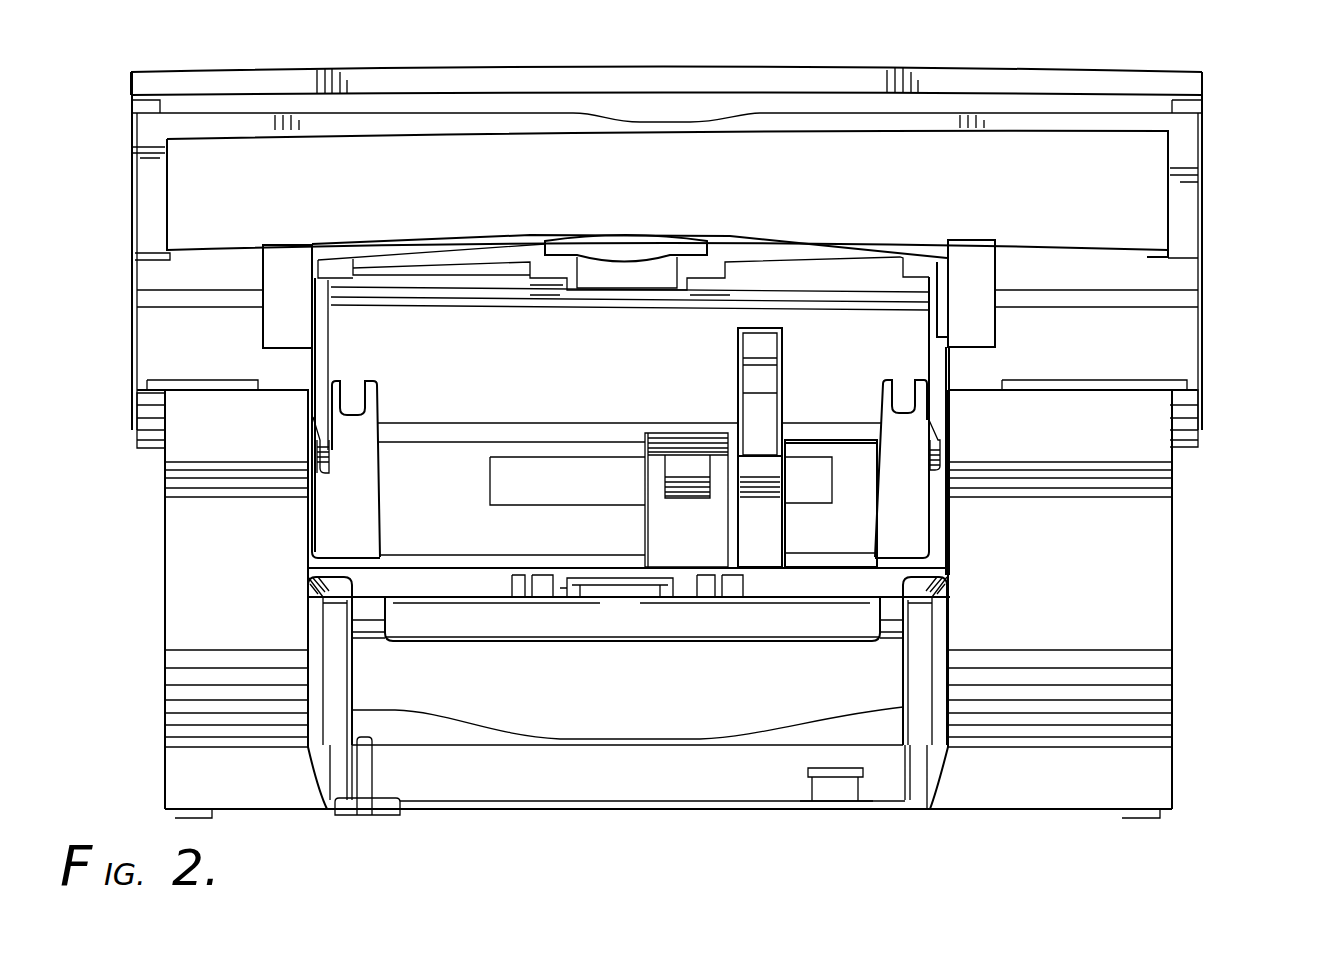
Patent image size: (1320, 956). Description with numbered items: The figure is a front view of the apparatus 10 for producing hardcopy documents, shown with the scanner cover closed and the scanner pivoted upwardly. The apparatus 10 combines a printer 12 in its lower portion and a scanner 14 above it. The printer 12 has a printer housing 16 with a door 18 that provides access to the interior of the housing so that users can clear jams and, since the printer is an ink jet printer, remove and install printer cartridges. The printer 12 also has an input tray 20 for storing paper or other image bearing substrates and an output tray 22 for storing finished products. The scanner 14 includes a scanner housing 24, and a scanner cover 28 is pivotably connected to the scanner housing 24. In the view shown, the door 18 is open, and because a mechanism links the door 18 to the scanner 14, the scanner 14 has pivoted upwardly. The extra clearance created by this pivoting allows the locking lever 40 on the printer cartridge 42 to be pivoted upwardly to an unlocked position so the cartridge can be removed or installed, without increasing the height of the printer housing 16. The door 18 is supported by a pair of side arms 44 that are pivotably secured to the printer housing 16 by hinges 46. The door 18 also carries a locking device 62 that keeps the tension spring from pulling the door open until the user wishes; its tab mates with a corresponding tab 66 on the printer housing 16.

The apparatus 10 is at (904, 47).
The printer 12 is at (1225, 666).
The scanner 14 is at (1230, 222).
The printer housing 16 is at (1167, 618).
The door 18 is at (765, 246).
The input tray 20 is at (900, 808).
The output tray 22 is at (912, 679).
The scanner housing 24 is at (1198, 156).
The scanner cover 28 is at (1200, 86).
The locking lever 40 is at (778, 354).
The printer cartridge 42 is at (782, 540).
The side arms 44 is at (336, 368).
The hinges 46 is at (326, 457).
The locking device 62 is at (622, 240).
The tab 66 is at (605, 579).